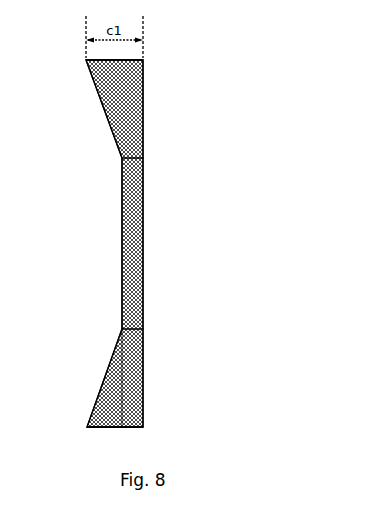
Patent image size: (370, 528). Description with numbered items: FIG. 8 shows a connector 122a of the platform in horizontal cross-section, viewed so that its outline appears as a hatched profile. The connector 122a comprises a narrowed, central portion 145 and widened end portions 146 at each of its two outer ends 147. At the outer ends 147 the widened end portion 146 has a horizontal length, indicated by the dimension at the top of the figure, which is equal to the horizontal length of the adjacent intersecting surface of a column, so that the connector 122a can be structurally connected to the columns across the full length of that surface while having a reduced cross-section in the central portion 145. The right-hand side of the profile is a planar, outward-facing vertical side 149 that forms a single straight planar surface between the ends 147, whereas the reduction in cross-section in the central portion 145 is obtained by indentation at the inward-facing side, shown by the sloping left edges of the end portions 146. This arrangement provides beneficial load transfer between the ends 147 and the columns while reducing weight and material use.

The narrowed central portion 145 is at (156, 228).
The widened end portion 146 is at (156, 100).
The outer end 147 is at (156, 60).
The outward-facing vertical side 149 is at (143, 188).
The connector 122a is at (133, 268).